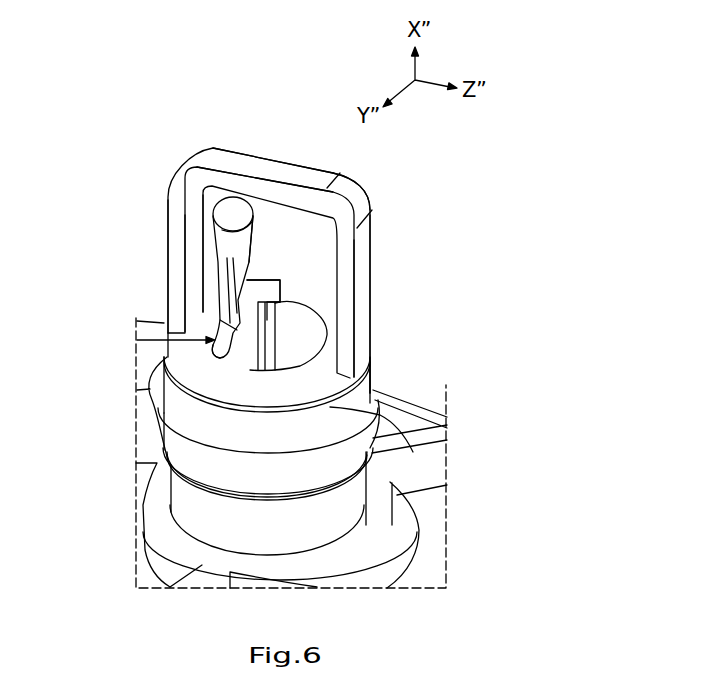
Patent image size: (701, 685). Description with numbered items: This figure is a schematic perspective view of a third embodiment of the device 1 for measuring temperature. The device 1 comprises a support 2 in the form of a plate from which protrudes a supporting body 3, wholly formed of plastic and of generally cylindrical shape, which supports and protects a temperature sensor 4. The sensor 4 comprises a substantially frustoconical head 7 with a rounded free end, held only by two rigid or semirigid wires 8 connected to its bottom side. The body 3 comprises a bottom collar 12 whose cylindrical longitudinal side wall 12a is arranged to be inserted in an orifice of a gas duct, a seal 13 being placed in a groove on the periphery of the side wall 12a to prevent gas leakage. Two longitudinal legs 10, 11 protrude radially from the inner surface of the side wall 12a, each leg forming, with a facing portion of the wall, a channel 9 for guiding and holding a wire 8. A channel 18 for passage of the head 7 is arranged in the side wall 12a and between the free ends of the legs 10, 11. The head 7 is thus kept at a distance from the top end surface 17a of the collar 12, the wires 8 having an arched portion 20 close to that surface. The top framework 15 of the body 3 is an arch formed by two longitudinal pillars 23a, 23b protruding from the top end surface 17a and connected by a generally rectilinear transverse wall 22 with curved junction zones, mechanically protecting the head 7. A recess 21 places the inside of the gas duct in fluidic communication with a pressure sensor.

The device for measuring temperature 1 is at (180, 143).
The support 2 is at (430, 510).
The supporting body 3 is at (120, 355).
The temperature sensor 4 is at (271, 218).
The head 7 is at (235, 207).
The wires 8 is at (207, 318).
The channel 9 is at (253, 295).
The longitudinal leg 10 is at (245, 350).
The longitudinal leg 11 is at (250, 285).
The bottom collar 12 is at (395, 370).
The longitudinal side wall 12a is at (413, 452).
The seal 13 is at (167, 425).
The top framework 15 is at (386, 172).
The top end surface 17a is at (322, 395).
The channel for passage of the head 18 is at (168, 388).
The arched portion 20 is at (217, 348).
The recess 21 is at (313, 318).
The transverse wall 22 is at (258, 150).
The longitudinal pillar 23a is at (172, 220).
The longitudinal pillar 23b is at (365, 255).